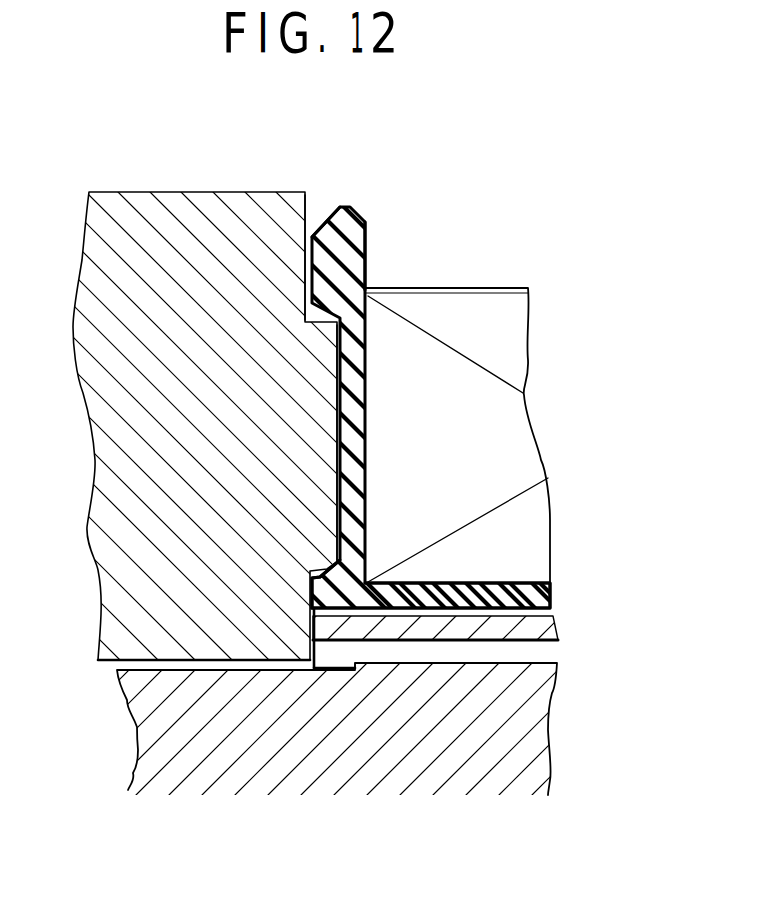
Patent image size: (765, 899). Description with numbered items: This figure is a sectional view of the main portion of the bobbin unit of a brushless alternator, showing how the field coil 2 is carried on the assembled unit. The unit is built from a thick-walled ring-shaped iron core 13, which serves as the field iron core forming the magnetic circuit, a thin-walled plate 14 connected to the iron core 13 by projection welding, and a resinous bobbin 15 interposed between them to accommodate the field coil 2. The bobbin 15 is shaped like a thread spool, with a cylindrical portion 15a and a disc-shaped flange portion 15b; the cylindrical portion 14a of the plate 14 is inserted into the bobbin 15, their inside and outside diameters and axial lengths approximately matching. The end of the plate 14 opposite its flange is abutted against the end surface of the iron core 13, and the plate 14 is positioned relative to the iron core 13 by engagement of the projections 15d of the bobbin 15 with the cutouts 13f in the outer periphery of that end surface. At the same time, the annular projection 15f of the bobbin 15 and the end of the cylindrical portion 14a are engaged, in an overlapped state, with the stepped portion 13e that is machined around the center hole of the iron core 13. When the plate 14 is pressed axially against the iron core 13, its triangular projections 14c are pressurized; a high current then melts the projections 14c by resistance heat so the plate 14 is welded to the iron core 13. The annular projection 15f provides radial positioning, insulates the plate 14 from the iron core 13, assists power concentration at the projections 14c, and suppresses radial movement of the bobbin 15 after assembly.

The field coil 2 is at (475, 312).
The iron core 13 is at (168, 190).
The stepped portion 13e is at (314, 540).
The cutouts 13f is at (308, 202).
The plate 14 is at (539, 642).
The cylindrical portion 14a is at (493, 642).
The projections 14c is at (313, 664).
The bobbin 15 is at (360, 213).
The cylindrical portion 15a is at (530, 580).
The flange portion 15b is at (365, 252).
The projections 15d is at (323, 205).
The annular projection 15f is at (310, 576).